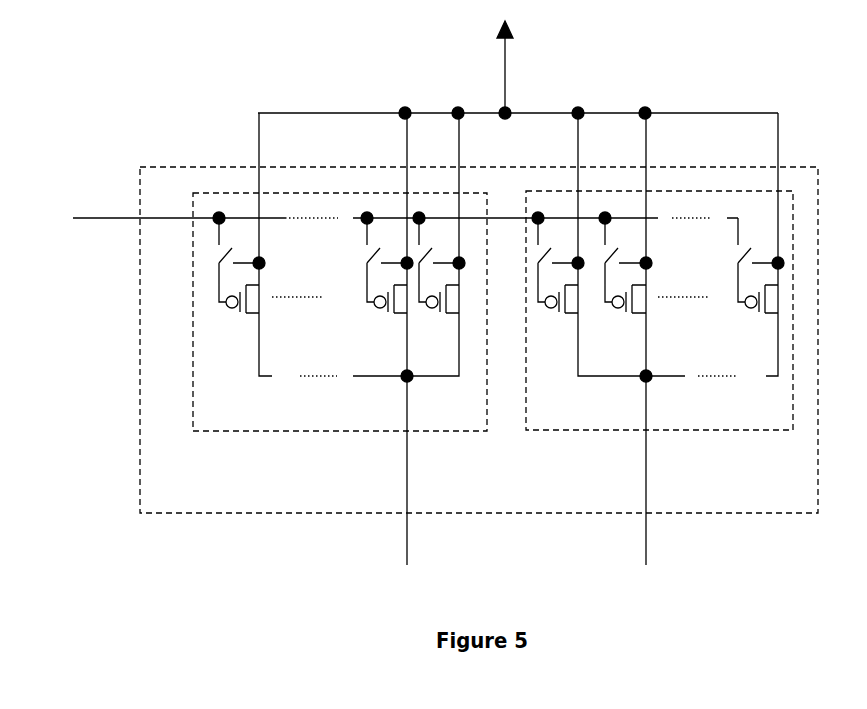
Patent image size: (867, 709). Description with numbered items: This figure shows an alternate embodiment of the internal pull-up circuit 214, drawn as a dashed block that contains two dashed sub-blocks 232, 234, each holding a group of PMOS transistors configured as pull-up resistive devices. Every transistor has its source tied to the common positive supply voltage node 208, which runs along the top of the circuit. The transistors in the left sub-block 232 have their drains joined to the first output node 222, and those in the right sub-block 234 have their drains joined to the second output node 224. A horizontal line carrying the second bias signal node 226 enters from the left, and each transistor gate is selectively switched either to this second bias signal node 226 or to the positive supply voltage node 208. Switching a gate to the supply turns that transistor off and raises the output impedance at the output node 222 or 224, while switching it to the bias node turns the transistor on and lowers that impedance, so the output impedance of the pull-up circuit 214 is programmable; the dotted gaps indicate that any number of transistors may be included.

The positive supply voltage node 208 is at (508, 111).
The internal pull-up circuit 214 is at (199, 500).
The first output node 222 is at (412, 380).
The second output node 224 is at (651, 380).
The second bias signal node 226 is at (117, 218).
The first sub-block of switched transistors 232 is at (252, 418).
The second sub-block of switched transistors 234 is at (572, 416).